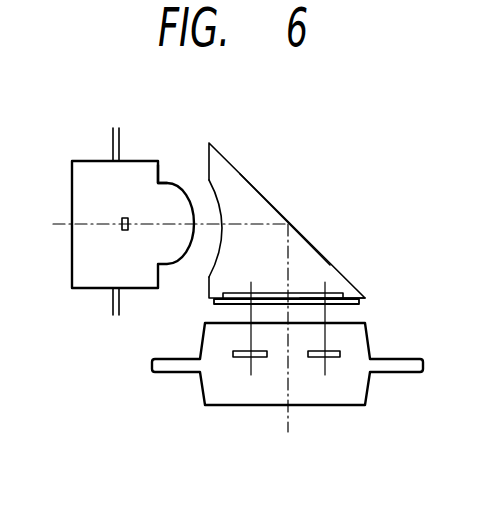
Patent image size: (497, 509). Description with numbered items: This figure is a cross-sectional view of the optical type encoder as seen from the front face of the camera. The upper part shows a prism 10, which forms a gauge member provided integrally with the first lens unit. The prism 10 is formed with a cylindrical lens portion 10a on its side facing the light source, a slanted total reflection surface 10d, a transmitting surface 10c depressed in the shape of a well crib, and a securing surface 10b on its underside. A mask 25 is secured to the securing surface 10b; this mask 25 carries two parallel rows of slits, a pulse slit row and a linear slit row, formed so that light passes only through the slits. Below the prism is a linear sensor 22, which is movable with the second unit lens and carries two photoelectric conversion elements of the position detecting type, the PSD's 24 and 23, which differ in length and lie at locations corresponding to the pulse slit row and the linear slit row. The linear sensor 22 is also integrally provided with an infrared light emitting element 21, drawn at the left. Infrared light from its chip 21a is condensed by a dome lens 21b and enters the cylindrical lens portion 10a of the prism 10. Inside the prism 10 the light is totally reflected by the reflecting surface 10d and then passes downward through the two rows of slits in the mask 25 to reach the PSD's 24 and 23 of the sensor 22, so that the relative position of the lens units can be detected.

The prism 10 is at (255, 198).
The cylindrical lens portion 10a is at (217, 196).
The securing surface 10b is at (350, 297).
The transmitting surface 10c is at (306, 292).
The total reflection surface 10d is at (278, 212).
The infrared light emitting element 21 is at (117, 125).
The chip 21a is at (124, 218).
The dome lens 21b is at (165, 182).
The linear sensor 22 is at (345, 445).
The photoelectric conversion element of the position detecting type 23 is at (241, 358).
The photoelectric conversion element of the position detecting type 24 is at (316, 358).
The mask 25 is at (351, 305).